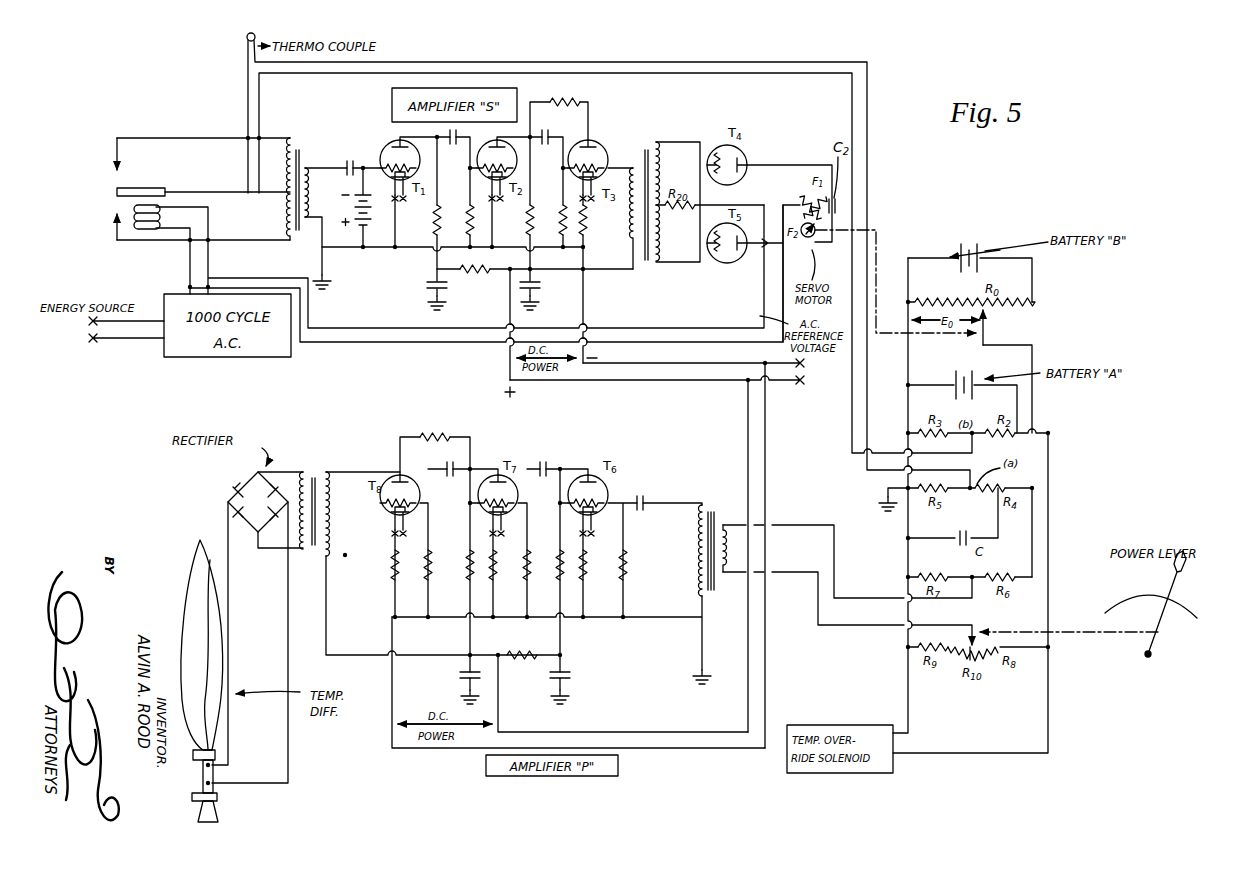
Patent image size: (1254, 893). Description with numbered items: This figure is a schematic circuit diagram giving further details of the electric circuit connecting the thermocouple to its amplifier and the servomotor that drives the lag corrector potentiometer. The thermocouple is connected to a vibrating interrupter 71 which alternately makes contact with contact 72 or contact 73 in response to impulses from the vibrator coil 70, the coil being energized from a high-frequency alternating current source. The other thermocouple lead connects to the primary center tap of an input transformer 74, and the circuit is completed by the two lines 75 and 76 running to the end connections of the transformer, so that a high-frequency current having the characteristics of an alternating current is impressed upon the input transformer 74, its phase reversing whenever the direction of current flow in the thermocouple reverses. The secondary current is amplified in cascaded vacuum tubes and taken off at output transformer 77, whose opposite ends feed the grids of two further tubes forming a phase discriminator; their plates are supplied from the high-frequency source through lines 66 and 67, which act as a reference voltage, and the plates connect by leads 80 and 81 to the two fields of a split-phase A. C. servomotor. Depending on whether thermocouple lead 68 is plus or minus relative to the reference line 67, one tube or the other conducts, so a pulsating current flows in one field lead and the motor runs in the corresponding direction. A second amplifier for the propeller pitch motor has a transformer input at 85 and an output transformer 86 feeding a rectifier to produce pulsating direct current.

The line of the high-frequency A. C. source 66 is at (212, 263).
The line of the A. C. reference voltage 67 is at (188, 279).
The thermocouple lead 68 is at (246, 162).
The vibrator coil 70 is at (138, 231).
The vibrating interrupter 71 is at (115, 192).
The contact 72 is at (114, 177).
The contact 73 is at (114, 210).
The input transformer 74 is at (307, 165).
The line to transformer end connection 75 is at (212, 126).
The line to transformer end connection 76 is at (170, 242).
The output transformer 77 is at (645, 153).
The plate lead 80 is at (778, 165).
The plate lead 81 is at (788, 246).
The transformer input of amplifier P 85 is at (722, 577).
The output transformer of amplifier P 86 is at (313, 552).